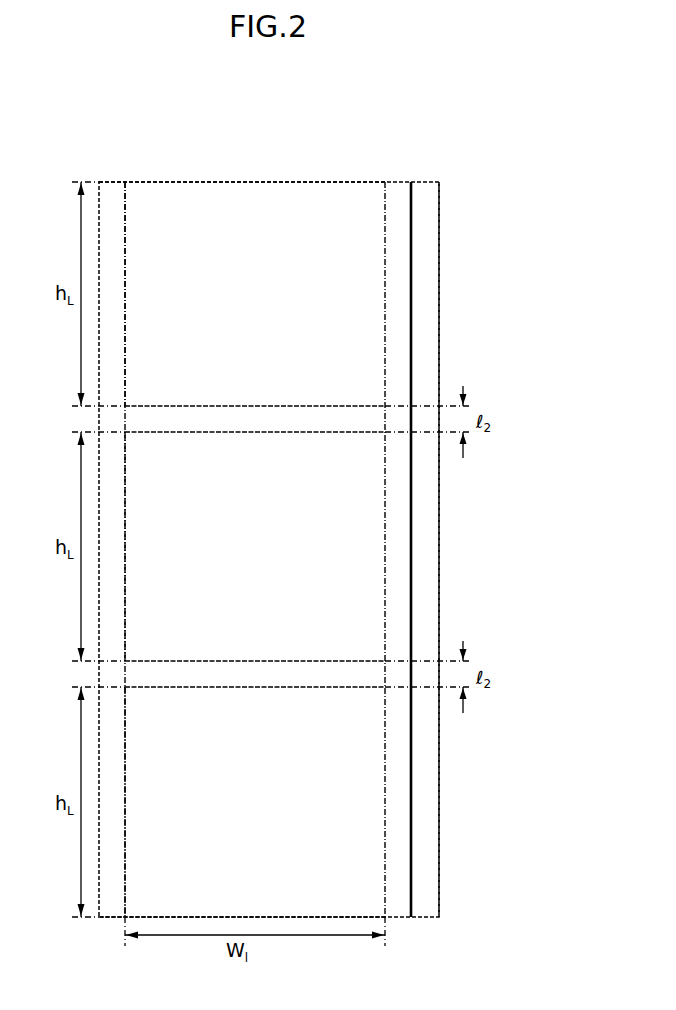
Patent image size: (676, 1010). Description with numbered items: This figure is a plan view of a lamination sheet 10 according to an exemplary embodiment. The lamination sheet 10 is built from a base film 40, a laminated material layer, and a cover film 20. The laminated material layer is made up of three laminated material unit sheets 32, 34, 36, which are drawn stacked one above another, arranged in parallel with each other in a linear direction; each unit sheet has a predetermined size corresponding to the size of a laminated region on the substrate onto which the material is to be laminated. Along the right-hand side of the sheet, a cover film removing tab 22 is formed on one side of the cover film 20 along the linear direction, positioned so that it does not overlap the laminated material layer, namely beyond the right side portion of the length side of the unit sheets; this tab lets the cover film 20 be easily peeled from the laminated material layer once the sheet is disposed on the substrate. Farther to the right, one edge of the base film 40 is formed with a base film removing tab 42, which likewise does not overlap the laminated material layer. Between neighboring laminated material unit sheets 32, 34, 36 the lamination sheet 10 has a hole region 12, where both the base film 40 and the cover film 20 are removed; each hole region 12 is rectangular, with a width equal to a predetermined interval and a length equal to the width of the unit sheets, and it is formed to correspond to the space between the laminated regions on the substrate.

The lamination sheet 10 is at (437, 148).
The hole region 12 is at (357, 422).
The cover film 20 is at (341, 181).
The cover film removing tab 22 is at (399, 181).
The laminated material unit sheet 32 is at (354, 291).
The laminated material unit sheet 34 is at (348, 562).
The laminated material unit sheet 36 is at (360, 866).
The base film 40 is at (440, 249).
The base film removing tab 42 is at (428, 211).